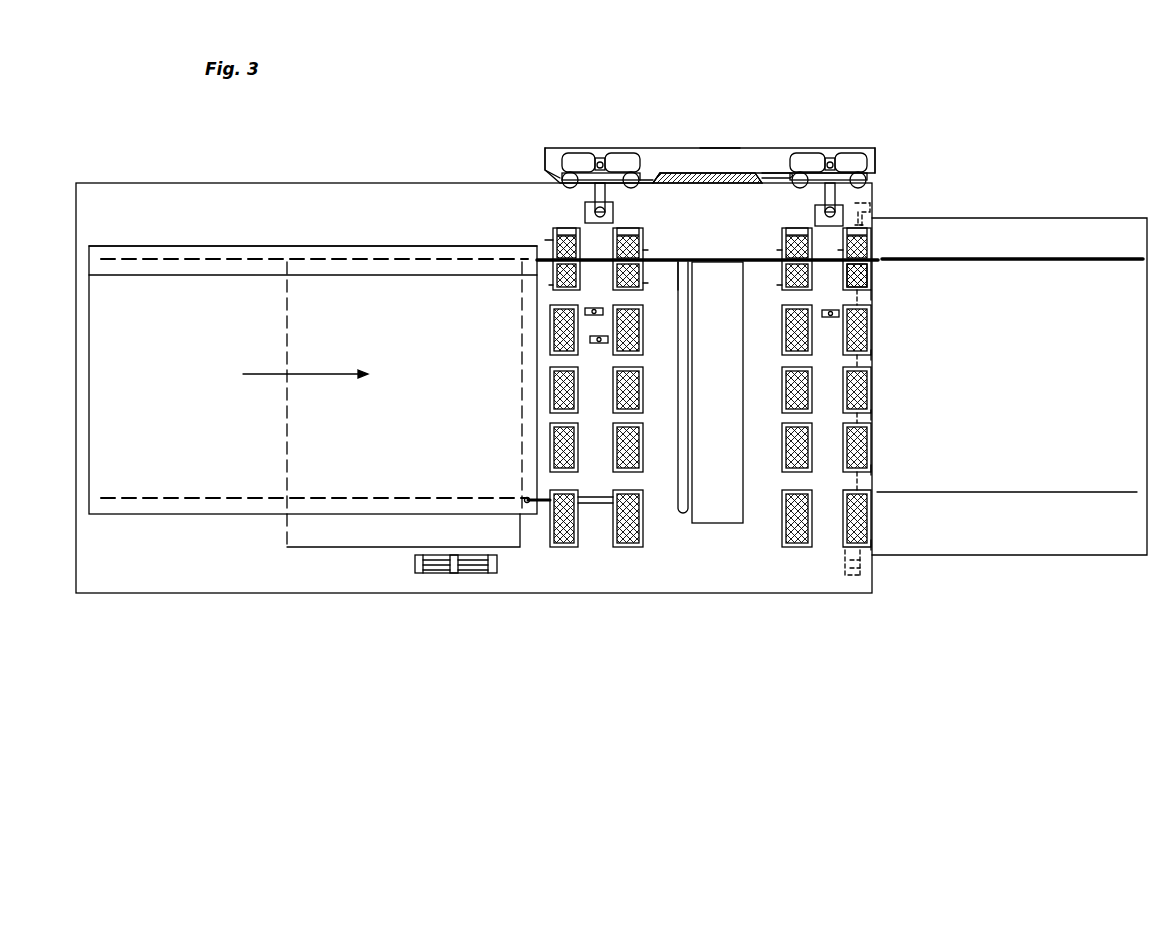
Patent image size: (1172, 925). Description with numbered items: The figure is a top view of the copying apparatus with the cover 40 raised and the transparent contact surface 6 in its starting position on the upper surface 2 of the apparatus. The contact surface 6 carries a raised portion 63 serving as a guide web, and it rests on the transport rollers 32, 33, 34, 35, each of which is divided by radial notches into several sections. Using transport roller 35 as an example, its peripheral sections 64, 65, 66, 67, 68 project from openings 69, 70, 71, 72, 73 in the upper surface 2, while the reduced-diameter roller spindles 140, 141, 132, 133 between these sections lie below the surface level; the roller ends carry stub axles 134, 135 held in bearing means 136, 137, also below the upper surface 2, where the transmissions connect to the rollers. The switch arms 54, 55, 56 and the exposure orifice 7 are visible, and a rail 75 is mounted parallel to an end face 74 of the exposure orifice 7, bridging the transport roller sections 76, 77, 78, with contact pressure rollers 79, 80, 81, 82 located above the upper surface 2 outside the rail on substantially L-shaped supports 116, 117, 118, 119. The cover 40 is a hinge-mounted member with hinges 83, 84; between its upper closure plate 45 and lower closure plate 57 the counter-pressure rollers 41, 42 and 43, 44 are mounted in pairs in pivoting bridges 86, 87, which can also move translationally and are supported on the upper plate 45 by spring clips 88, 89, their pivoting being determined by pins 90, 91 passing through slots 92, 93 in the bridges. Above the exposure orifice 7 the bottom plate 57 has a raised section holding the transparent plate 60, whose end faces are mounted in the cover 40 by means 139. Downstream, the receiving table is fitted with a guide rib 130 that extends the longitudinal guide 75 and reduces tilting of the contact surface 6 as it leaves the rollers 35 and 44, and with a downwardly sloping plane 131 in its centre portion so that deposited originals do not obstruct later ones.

The upper surface of the apparatus 2 is at (547, 497).
The transparent contact surface 6 is at (341, 286).
The exposure orifice 7 is at (735, 362).
The transport roller 32 is at (560, 548).
The transport roller 33 is at (626, 548).
The transport roller 34 is at (792, 550).
The transport roller 35 is at (850, 548).
The cover 40 is at (772, 148).
The counter-pressure roller 41 is at (562, 180).
The counter-pressure roller 42 is at (645, 176).
The counter-pressure roller 43 is at (795, 176).
The counter-pressure roller 44 is at (866, 183).
The top plate 45 is at (715, 148).
The switching arm 54 is at (594, 308).
The switching arm 55 is at (599, 343).
The switching arm 56 is at (830, 317).
The bottom plate 57 is at (700, 176).
The transparent plate 60 is at (750, 176).
The raised portion 63 is at (401, 250).
The peripheral section 64 is at (862, 516).
The peripheral section 65 is at (862, 446).
The peripheral section 66 is at (863, 388).
The peripheral section 67 is at (862, 328).
The peripheral section 68 is at (866, 272).
The opening 69 is at (872, 296).
The opening 70 is at (872, 356).
The opening 71 is at (872, 418).
The opening 72 is at (870, 471).
The opening 73 is at (866, 546).
The end face of the exposure orifice 74 is at (690, 300).
The rail 75 is at (712, 262).
The transport roller section 76 is at (790, 284).
The transport roller section 77 is at (642, 285).
The transport roller section 78 is at (555, 285).
The contact pressure roller 79 is at (845, 250).
The contact pressure roller 80 is at (782, 250).
The contact pressure roller 81 is at (643, 250).
The contact pressure roller 82 is at (553, 240).
The hinge 83 is at (826, 196).
The hinge 84 is at (606, 196).
The pivoting bridge 86 is at (560, 155).
The pivoting bridge 87 is at (876, 168).
The spring clip 88 is at (568, 160).
The spring clip 89 is at (862, 160).
The pin 90 is at (606, 160).
The pin 91 is at (838, 162).
The slot 92 is at (598, 162).
The slot 93 is at (830, 162).
The L-shaped support 116 is at (565, 230).
The L-shaped support 117 is at (643, 232).
The L-shaped support 118 is at (784, 234).
The L-shaped support 119 is at (870, 237).
The guide rib 130 is at (1083, 258).
The downwardly sloping plane 131 is at (1078, 487).
The roller spindle 132 is at (862, 362).
The roller spindle 133 is at (860, 298).
The stub axle 134 is at (870, 555).
The stub axle 135 is at (866, 221).
The bearing means 136 is at (862, 575).
The bearing means 137 is at (868, 207).
The mounting means 139 is at (658, 176).
The roller spindle 140 is at (860, 483).
The roller spindle 141 is at (862, 419).